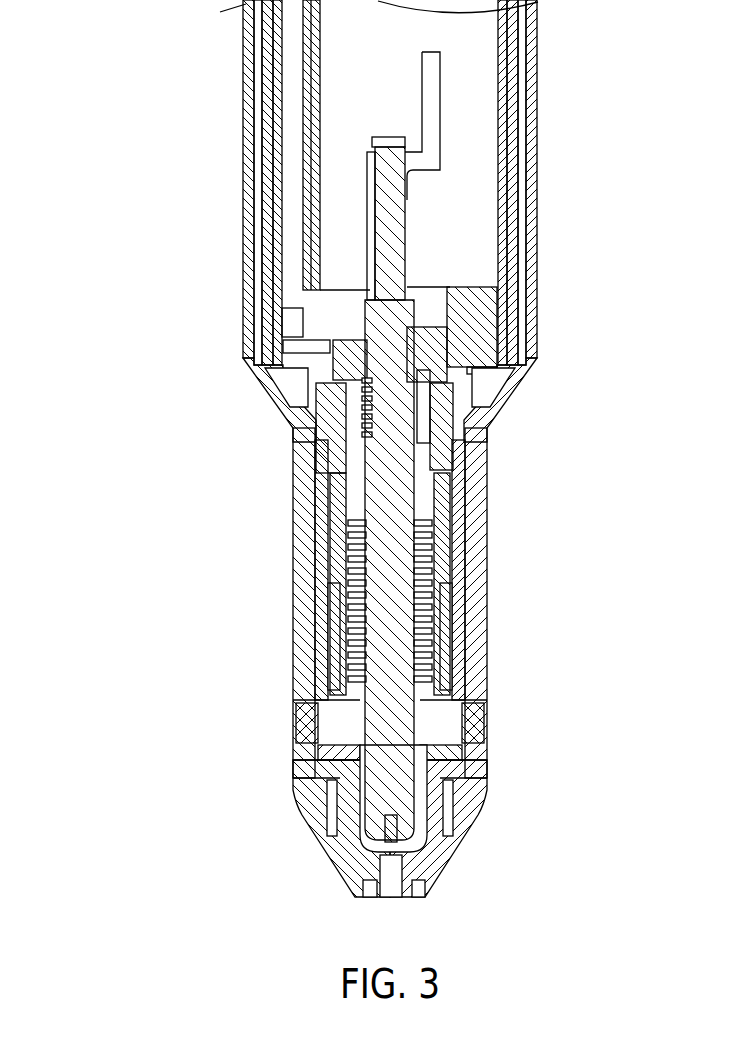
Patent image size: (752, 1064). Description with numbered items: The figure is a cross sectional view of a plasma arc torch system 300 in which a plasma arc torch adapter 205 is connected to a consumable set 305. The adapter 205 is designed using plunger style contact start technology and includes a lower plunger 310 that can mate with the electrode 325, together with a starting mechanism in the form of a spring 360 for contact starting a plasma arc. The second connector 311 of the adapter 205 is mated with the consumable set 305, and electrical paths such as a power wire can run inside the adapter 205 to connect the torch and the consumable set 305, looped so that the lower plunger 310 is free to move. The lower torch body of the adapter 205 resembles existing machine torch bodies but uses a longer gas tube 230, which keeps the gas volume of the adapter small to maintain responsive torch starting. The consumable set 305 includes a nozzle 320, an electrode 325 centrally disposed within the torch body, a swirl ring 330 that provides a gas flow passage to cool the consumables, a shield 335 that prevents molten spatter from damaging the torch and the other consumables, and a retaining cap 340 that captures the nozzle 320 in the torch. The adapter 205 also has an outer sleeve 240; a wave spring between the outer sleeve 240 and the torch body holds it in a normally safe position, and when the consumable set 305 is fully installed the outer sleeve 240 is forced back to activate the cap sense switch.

The plasma arc torch system 300 is at (88, 171).
The plasma arc torch adapter 205 is at (560, 121).
The gas tube 230 is at (276, 130).
The outer sleeve 240 is at (249, 333).
The lower plunger 310 is at (388, 210).
The second connector 311 is at (442, 428).
The spring 360 is at (367, 414).
The swirl ring 330 is at (352, 607).
The retaining cap 340 is at (297, 652).
The consumable set 305 is at (517, 623).
The electrode 325 is at (380, 768).
The shield 335 is at (305, 825).
The nozzle 320 is at (430, 820).